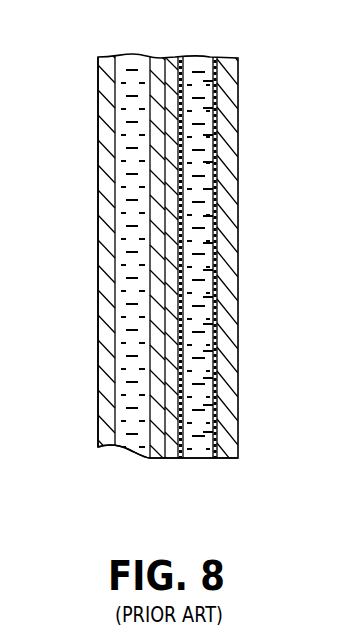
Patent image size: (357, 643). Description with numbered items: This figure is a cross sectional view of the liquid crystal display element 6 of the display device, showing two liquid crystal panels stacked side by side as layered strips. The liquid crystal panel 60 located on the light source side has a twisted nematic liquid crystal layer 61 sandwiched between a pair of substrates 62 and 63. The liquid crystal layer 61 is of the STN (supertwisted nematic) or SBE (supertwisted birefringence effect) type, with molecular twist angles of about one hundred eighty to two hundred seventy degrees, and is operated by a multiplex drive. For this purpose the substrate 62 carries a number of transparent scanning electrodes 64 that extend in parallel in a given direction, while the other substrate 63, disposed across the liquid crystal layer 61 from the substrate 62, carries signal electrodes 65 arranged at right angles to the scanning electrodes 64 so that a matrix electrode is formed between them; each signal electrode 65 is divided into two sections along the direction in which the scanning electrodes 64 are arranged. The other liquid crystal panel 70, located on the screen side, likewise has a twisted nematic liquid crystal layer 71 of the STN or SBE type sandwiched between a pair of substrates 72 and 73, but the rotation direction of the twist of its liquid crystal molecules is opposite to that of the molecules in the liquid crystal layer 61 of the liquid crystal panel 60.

The prior art display panel 6 is at (213, 496).
The liquid crystal panel 60 is at (216, 467).
The liquid crystal layer 61 is at (198, 58).
The substrate 62 is at (238, 133).
The substrate 63 is at (174, 57).
The scanning electrodes 64 is at (233, 308).
The signal electrodes 65 is at (180, 459).
The liquid crystal panel 70 is at (132, 450).
The liquid crystal layer 71 is at (127, 57).
The substrate 72 is at (162, 57).
The substrate 73 is at (98, 187).